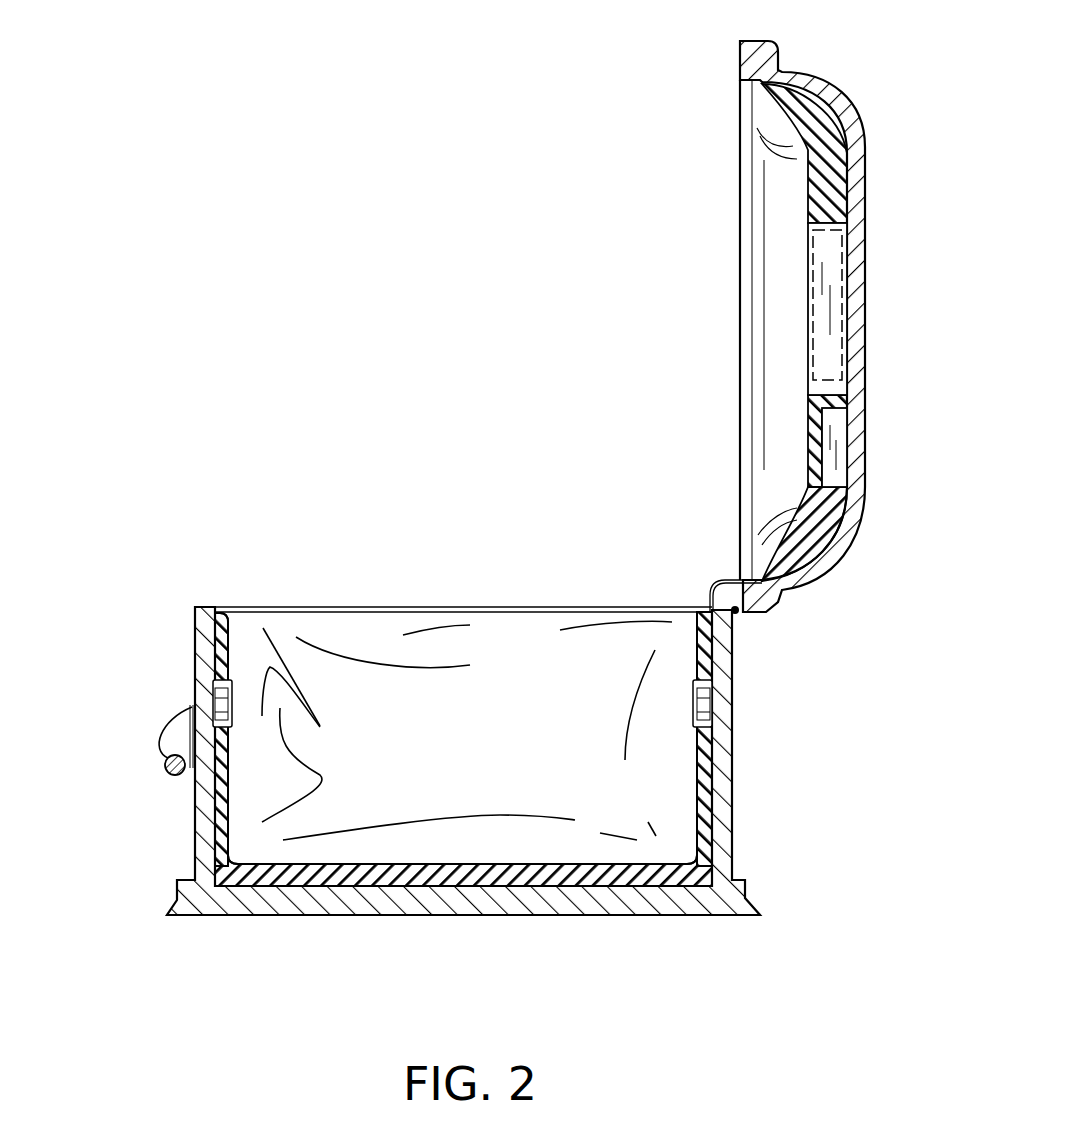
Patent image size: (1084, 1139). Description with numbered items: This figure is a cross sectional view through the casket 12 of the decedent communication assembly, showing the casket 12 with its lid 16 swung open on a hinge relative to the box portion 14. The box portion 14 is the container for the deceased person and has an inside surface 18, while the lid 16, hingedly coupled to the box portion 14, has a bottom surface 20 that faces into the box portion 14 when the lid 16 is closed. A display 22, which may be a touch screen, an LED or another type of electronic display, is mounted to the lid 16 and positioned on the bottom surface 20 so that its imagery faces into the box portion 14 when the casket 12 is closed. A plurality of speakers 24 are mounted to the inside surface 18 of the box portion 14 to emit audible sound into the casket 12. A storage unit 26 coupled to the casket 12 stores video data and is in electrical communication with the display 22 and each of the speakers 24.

The casket 12 is at (195, 643).
The box portion 14 is at (120, 798).
The lid 16 is at (882, 102).
The inside surface 18 is at (225, 650).
The bottom surface 20 is at (807, 185).
The display 22 is at (805, 292).
The speakers 24 is at (232, 706).
The storage unit 26 is at (845, 490).